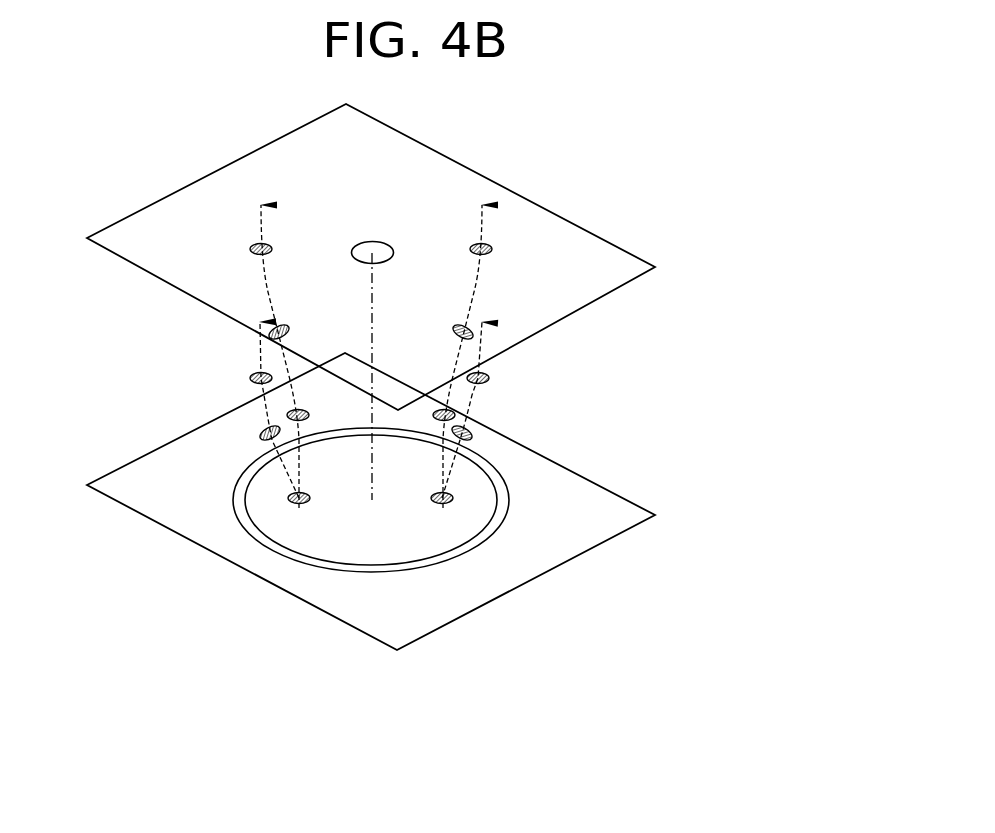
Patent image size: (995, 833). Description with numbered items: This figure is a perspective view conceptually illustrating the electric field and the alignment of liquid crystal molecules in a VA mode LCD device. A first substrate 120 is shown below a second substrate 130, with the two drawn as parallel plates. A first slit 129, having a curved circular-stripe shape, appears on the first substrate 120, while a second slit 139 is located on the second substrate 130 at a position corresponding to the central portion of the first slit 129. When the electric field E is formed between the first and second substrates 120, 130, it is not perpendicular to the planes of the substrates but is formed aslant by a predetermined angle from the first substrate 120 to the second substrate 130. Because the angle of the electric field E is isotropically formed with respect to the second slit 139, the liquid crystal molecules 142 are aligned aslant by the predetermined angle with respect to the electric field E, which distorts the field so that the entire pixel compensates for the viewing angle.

The second substrate 130 is at (580, 279).
The first substrate 120 is at (578, 528).
The first slit 129 is at (472, 545).
The second slit 139 is at (385, 252).
The liquid crystal molecules 142 is at (491, 378).
The electric field E is at (477, 403).